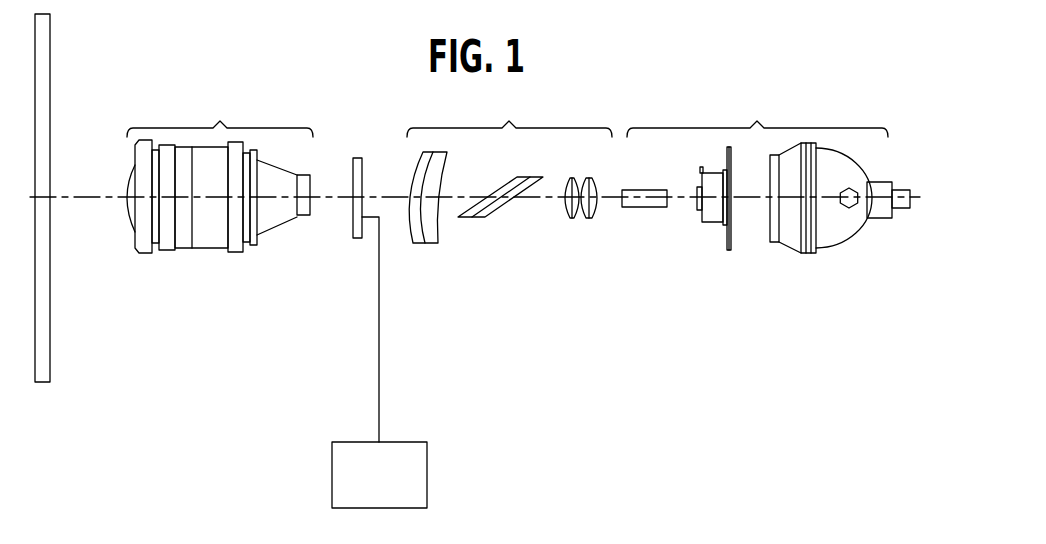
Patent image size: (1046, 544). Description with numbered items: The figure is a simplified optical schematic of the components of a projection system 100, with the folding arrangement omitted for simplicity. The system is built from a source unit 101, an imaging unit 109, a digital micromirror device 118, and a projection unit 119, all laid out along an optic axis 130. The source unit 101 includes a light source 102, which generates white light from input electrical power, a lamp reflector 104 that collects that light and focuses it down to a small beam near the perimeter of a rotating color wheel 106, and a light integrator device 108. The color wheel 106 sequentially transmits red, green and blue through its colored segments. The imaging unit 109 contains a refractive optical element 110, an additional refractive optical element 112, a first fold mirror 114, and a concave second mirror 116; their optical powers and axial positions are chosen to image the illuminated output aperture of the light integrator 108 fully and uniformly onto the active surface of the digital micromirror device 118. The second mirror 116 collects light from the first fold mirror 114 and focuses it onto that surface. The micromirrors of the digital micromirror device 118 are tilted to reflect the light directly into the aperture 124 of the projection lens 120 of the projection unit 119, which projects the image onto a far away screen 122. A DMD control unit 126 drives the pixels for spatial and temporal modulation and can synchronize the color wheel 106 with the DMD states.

The projection system 100 is at (608, 88).
The source unit 101 is at (766, 213).
The light source 102 is at (850, 209).
The lamp reflector 104 is at (782, 243).
The color wheel 106 is at (728, 239).
The light integrator device 108 is at (648, 208).
The imaging unit 109 is at (512, 200).
The refractive optical element 110 is at (597, 218).
The additional refractive optical element 112 is at (565, 218).
The first fold mirror 114 is at (483, 218).
The second mirror 116 is at (422, 244).
The digital micromirror device 118 is at (355, 239).
The projection unit 119 is at (226, 199).
The projection lens 120 is at (278, 229).
The screen 122 is at (50, 363).
The aperture 124 is at (302, 216).
The DMD control unit 126 is at (427, 482).
The optic axis 130 is at (680, 197).